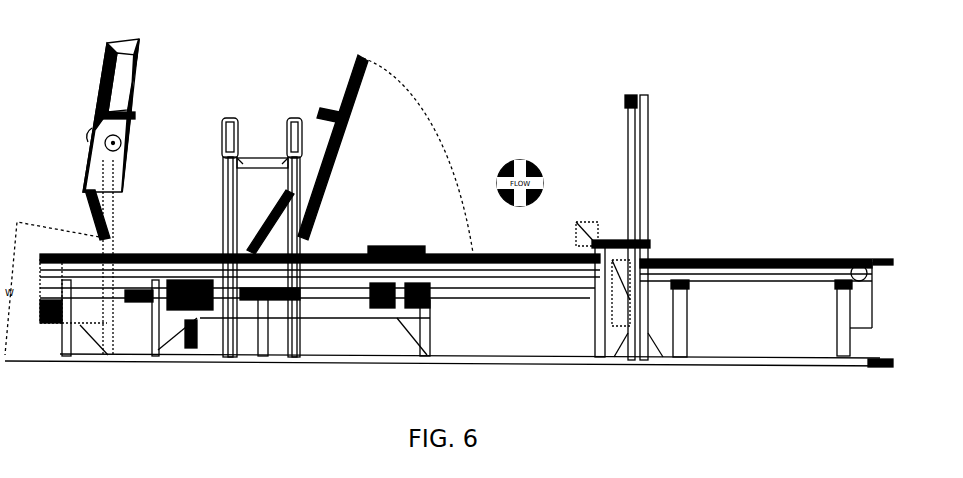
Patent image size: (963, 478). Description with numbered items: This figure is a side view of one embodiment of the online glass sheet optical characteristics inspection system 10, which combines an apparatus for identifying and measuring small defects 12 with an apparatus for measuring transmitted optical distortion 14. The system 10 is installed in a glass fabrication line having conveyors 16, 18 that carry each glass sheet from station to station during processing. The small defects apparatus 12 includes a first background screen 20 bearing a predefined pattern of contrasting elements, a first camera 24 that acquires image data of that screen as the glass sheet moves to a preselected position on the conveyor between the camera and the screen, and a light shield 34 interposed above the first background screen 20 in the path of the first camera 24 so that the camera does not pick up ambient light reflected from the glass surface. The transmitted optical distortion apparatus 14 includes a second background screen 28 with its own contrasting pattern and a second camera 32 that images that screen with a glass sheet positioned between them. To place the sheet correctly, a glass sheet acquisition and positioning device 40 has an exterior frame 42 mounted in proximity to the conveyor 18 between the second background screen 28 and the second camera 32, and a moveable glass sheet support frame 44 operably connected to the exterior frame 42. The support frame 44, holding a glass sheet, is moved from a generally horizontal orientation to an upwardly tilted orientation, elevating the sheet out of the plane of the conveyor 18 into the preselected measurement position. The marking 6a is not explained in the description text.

The online glass sheet optical characteristics inspection system 10 is at (418, 139).
The apparatus for identifying and measuring small defects 12 is at (678, 227).
The apparatus for measuring transmitted optical distortion 14 is at (234, 60).
The conveyor 16 is at (756, 295).
The conveyor 18 is at (320, 293).
The first background screen 20 is at (596, 301).
The first camera 24 is at (610, 227).
The second background screen 28 is at (130, 197).
The second camera 32 is at (613, 223).
The light shield 34 is at (664, 282).
The glass sheet acquisition and positioning device 40 is at (229, 237).
The exterior frame 42 is at (318, 237).
The moveable glass sheet support frame 44 is at (332, 142).
The gap 6a is at (684, 249).